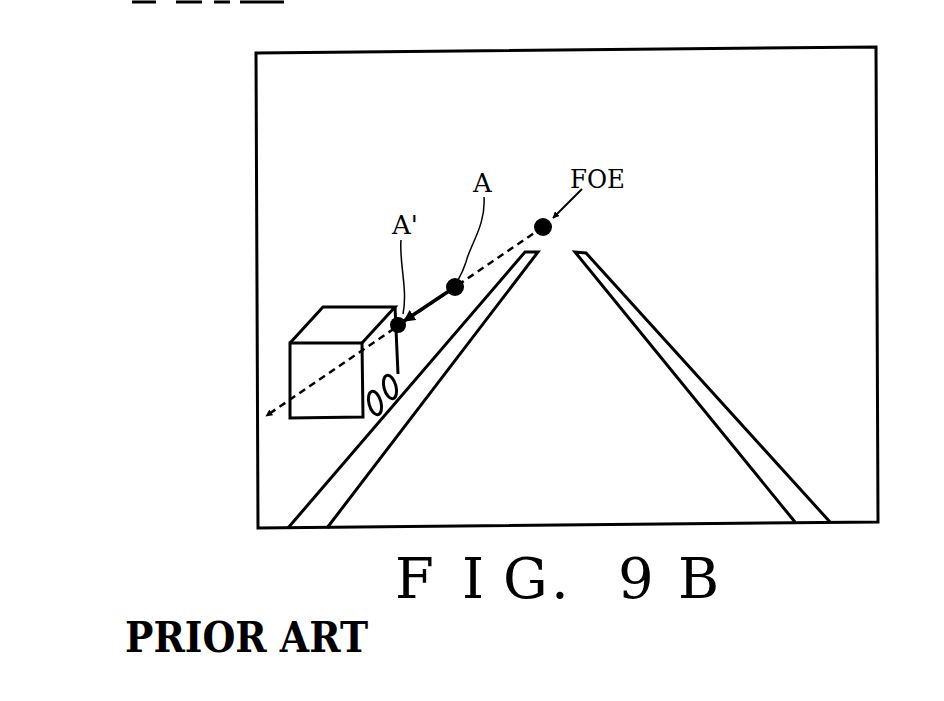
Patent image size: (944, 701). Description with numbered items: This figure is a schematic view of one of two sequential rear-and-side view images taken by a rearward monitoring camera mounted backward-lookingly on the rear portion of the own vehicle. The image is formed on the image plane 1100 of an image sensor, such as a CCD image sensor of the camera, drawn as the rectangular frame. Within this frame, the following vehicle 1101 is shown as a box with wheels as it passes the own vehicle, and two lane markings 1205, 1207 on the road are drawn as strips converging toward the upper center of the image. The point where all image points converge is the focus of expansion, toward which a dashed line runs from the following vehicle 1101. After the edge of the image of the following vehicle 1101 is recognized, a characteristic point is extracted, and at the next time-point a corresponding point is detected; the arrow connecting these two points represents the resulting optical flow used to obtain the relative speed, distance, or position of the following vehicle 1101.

The image plane 1100 is at (387, 50).
The following vehicle 1101 is at (349, 312).
The lane marking 1205 is at (748, 450).
The lane marking 1207 is at (385, 440).